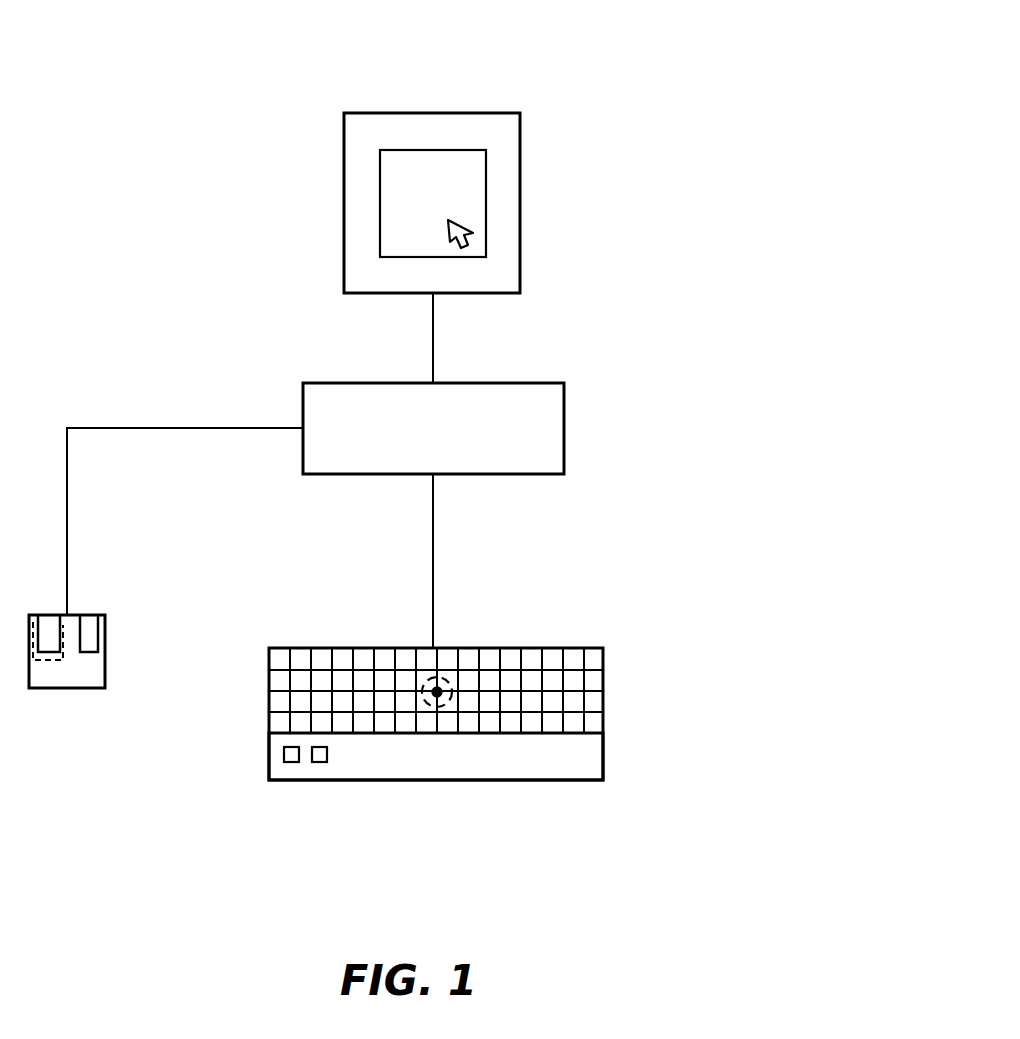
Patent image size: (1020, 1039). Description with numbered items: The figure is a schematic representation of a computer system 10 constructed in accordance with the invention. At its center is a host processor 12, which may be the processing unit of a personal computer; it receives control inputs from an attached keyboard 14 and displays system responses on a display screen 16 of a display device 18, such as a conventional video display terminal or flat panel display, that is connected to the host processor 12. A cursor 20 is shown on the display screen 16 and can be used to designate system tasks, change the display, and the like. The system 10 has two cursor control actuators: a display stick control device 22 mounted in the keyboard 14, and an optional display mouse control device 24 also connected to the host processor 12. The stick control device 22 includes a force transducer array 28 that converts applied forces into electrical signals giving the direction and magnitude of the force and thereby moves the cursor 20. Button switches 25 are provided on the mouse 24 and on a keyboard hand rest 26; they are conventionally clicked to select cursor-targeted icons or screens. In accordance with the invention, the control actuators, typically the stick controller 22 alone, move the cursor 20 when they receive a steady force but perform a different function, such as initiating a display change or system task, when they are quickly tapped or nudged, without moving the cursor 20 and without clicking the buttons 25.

The computer system 10 is at (722, 112).
The host processor 12 is at (564, 414).
The keyboard 14 is at (537, 648).
The display screen 16 is at (406, 155).
The display device 18 is at (484, 113).
The cursor 20 is at (464, 224).
The display stick control device 22 is at (431, 694).
The display mouse control device 24 is at (105, 670).
The button switches 25 is at (86, 617).
The keyboard hand rest 26 is at (565, 755).
The force transducer array 28 is at (445, 698).